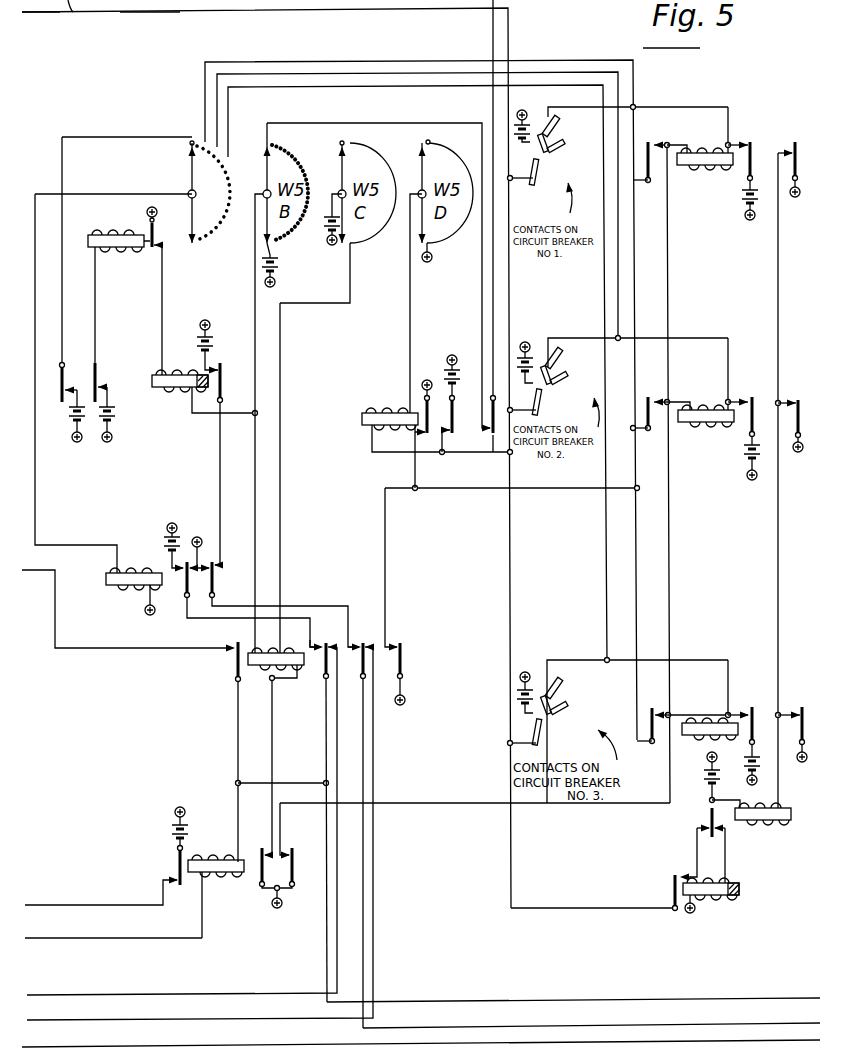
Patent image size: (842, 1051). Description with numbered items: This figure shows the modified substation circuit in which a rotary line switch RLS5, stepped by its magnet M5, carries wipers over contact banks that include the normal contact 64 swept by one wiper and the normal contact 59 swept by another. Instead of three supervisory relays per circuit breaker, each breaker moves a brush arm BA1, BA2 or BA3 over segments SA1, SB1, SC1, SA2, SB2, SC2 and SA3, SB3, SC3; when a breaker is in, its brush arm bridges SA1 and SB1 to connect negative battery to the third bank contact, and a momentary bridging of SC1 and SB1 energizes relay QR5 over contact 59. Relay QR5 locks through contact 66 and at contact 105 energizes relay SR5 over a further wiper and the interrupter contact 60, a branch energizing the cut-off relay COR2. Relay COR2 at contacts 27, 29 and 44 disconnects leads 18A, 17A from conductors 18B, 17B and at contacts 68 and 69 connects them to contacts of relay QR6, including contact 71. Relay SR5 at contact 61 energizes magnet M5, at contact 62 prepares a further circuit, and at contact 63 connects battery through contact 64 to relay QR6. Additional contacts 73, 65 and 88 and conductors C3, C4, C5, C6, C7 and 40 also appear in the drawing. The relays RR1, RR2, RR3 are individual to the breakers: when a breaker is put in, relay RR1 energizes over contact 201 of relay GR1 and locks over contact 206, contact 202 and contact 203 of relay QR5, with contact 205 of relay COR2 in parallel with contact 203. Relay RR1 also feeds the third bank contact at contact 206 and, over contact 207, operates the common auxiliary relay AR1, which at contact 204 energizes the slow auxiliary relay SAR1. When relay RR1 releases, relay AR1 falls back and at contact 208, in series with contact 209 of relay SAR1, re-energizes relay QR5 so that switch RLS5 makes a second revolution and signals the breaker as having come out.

The normal contact 64 is at (198, 140).
The interrupter contact 60 is at (160, 250).
The contact of relay SR5 63 is at (76, 386).
The contact of relay SR5 61 is at (113, 371).
The contact of relay SR5 62 is at (217, 367).
The normal contact 59 is at (432, 142).
The contact of relay QR6 71 is at (216, 564).
The armature of relay QR6 73 is at (169, 566).
The contact 65 is at (215, 577).
The contact 88 is at (184, 581).
The contact of relay COR2 44 is at (233, 652).
The contact of relay COR2 69 is at (317, 642).
The contact of relay COR2 29 is at (329, 643).
The contact of relay COR2 27 is at (367, 643).
The contact of relay COR2 205 is at (394, 645).
The contact of relay COR2 68 is at (356, 650).
The locking contact of relay QR5 66 is at (446, 454).
The contact of relay QR5 105 is at (491, 436).
The contact of relay QR5 203 is at (424, 398).
The contact of relay RR1 202 is at (656, 143).
The contact of relay RR1 206 is at (741, 144).
The contact of relay RR1 207 is at (793, 153).
The contact of relay AR1 208 is at (697, 830).
The contact of relay SAR1 209 is at (684, 874).
The contact of relay AR1 204 is at (727, 833).
The contact of relay GR1 201 is at (283, 854).
The conductor C3 is at (64, 17).
The conductor C4 is at (128, 12).
The conductor C5 is at (56, 570).
The conductor C6 is at (62, 904).
The conductor C7 is at (62, 936).
The conductor 18B is at (88, 994).
The conductor 17B is at (163, 988).
The common return conductor 40 is at (182, 1046).
The lead 18A is at (671, 994).
The lead 17A is at (718, 1025).
The magnet M5 is at (115, 288).
The rotary line switch RLS5 is at (379, 265).
The relay SR5 is at (198, 393).
The relay QR5 is at (362, 421).
The relay QR6 is at (98, 404).
The cut-off relay COR2 is at (276, 526).
The relay GR1 is at (208, 872).
The relay RR1 is at (699, 145).
The relay RR2 is at (717, 409).
The relay RR3 is at (722, 722).
The auxiliary relay AR1 is at (789, 814).
The slow auxiliary relay SAR1 is at (712, 897).
The segment SA1 is at (545, 120).
The brush arm BA1 is at (559, 134).
The segment SB1 is at (540, 168).
The segment SC1 is at (537, 189).
The segment SA2 is at (559, 354).
The brush arm BA2 is at (559, 367).
The segment SB2 is at (539, 395).
The segment SC2 is at (543, 412).
The segment SA3 is at (562, 681).
The brush arm BA3 is at (565, 695).
The segment SB3 is at (535, 730).
The segment SC3 is at (545, 748).